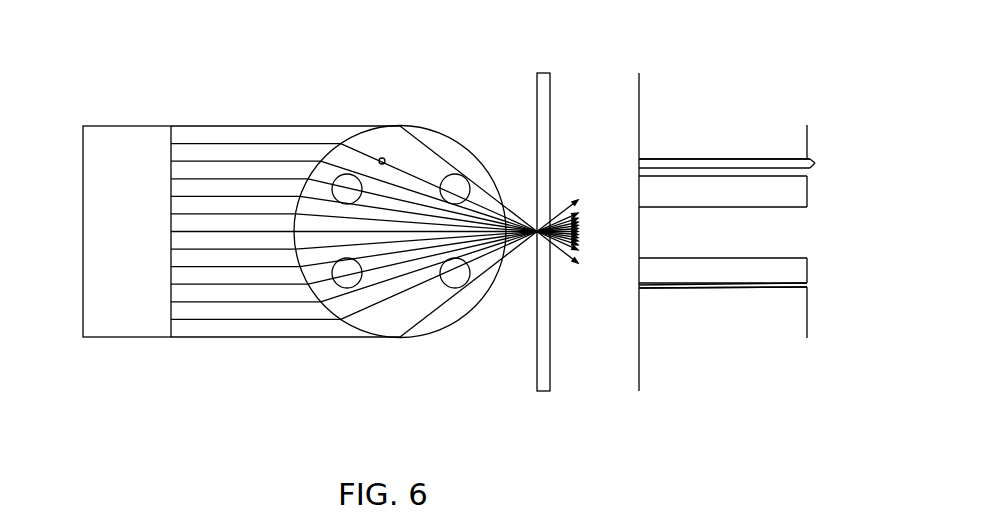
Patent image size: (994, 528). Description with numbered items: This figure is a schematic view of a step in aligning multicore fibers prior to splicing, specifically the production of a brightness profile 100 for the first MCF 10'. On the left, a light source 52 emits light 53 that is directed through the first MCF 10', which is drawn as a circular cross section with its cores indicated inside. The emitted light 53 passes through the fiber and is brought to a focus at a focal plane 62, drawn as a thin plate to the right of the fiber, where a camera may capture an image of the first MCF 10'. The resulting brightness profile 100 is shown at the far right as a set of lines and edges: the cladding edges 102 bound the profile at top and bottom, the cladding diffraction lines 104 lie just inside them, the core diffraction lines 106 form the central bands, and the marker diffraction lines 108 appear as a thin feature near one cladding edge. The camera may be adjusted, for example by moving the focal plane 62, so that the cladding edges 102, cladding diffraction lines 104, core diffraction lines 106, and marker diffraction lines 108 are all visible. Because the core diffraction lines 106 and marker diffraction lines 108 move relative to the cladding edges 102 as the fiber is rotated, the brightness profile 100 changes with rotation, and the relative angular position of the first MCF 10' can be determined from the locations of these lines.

The light source 52 is at (145, 125).
The emitted light 53 is at (209, 125).
The first MCF 10' is at (436, 203).
The focal plane 62 is at (551, 73).
The brightness profile 100 is at (801, 80).
The cladding edges 102 is at (762, 148).
The cladding diffraction lines 104 is at (808, 286).
The core diffraction lines 106 is at (807, 283).
The marker diffraction lines 108 is at (815, 163).